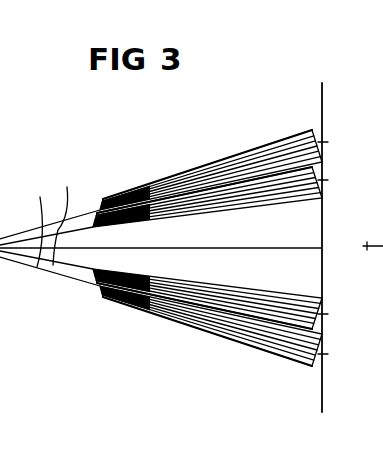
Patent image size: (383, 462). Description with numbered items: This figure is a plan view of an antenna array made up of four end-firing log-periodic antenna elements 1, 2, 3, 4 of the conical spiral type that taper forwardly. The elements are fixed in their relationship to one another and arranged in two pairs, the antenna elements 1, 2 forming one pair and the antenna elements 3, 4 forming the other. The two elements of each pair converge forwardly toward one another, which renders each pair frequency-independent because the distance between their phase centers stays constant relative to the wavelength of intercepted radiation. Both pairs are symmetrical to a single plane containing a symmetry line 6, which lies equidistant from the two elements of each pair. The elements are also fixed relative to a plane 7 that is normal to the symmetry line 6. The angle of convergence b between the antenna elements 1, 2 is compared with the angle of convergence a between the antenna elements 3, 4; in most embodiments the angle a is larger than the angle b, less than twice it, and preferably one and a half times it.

The antenna element 1 is at (175, 290).
The antenna element 2 is at (187, 207).
The antenna element 3 is at (265, 347).
The antenna element 4 is at (242, 160).
The symmetry line 6 is at (303, 243).
The plane 7 is at (323, 123).
The angle of convergence a is at (36, 223).
The angle of convergence b is at (60, 217).